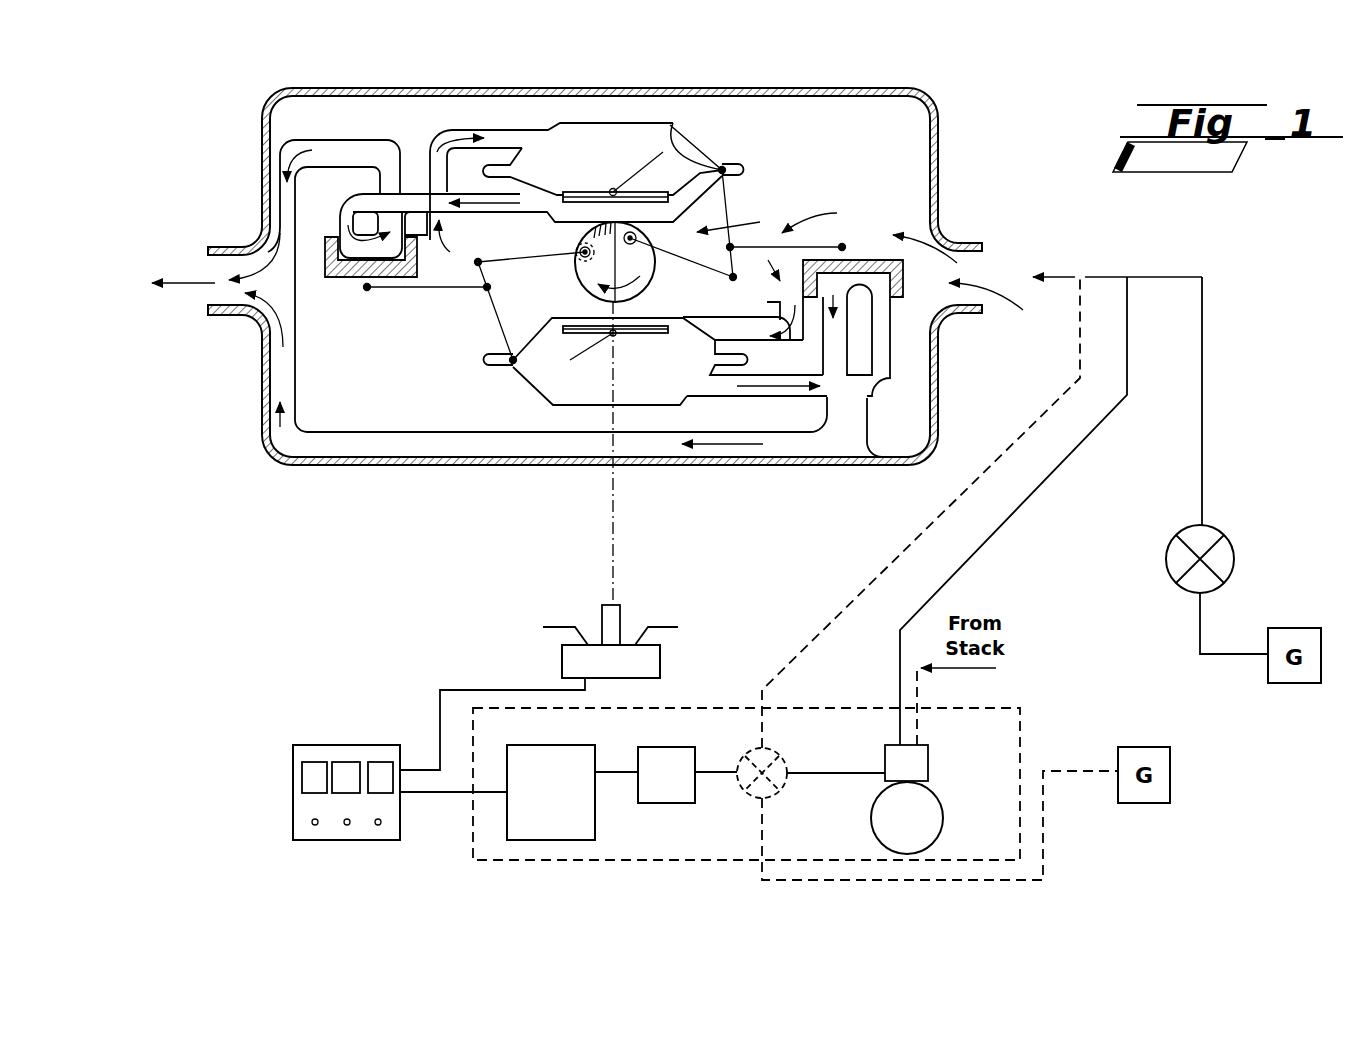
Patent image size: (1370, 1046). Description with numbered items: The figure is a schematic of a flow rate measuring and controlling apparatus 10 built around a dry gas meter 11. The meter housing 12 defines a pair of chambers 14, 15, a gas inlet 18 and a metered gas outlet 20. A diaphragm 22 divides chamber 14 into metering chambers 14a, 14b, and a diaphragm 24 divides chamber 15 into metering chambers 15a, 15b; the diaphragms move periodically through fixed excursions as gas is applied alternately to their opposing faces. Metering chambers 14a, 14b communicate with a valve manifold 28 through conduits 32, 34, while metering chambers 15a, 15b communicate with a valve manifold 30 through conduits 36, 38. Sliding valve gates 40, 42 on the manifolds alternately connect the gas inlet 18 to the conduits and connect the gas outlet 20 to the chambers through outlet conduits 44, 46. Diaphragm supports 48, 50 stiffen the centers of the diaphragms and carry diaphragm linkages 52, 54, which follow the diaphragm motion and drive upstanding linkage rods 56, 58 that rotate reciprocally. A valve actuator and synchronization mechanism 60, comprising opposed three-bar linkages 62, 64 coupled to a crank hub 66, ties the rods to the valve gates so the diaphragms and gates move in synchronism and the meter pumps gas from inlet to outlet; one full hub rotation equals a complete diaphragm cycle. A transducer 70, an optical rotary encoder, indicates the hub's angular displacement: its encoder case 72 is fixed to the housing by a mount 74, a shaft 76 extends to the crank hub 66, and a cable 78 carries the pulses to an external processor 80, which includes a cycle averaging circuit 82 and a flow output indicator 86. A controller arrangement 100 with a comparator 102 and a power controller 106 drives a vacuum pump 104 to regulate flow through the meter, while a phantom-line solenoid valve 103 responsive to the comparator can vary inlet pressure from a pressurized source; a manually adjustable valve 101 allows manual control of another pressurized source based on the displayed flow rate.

The flow rate measuring and controlling apparatus 10 is at (925, 65).
The dry gas meter 11 is at (548, 86).
The meter housing 12 is at (663, 87).
The chamber 14 is at (716, 138).
The metering chamber 14a is at (593, 140).
The metering chamber 14b is at (735, 207).
The chamber 15 is at (516, 385).
The metering chamber 15a is at (575, 386).
The metering chamber 15b is at (525, 340).
The gas inlet 18 is at (997, 260).
The metered gas outlet 20 is at (195, 302).
The diaphragm 22 is at (553, 130).
The diaphragm 24 is at (697, 342).
The valve manifold 28 is at (343, 207).
The valve manifold 30 is at (905, 300).
The conduit 32 is at (440, 140).
The conduit 34 is at (350, 214).
The conduit 36 is at (868, 415).
The conduit 38 is at (752, 320).
The valve gate 40 is at (343, 278).
The valve gate 42 is at (865, 260).
The outlet conduit 44 is at (327, 137).
The outlet conduit 46 is at (855, 475).
The diaphragm support 48 is at (584, 192).
The diaphragm support 50 is at (650, 332).
The diaphragm linkage 52 is at (670, 125).
The diaphragm linkage 54 is at (495, 370).
The linkage rod 56 is at (772, 168).
The linkage rod 58 is at (508, 359).
The valve actuator and synchronization mechanism 60 is at (432, 300).
The three-bar linkage 62 is at (494, 292).
The three-bar linkage 64 is at (724, 247).
The crank hub 66 is at (650, 295).
The transducer 70 is at (662, 645).
The encoder case 72 is at (662, 667).
The mount 74 is at (562, 627).
The shaft 76 is at (620, 612).
The cable 78 is at (507, 690).
The processor 80 is at (337, 716).
The cycle averaging circuit 82 is at (293, 790).
The flow output indicator 86 is at (360, 745).
The controller arrangement 100 is at (1020, 728).
The manually adjustable valve 101 is at (1234, 552).
The comparator 102 is at (595, 827).
The solenoid valve 103 is at (788, 787).
The vacuum pump 104 is at (928, 777).
The power controller 106 is at (668, 747).